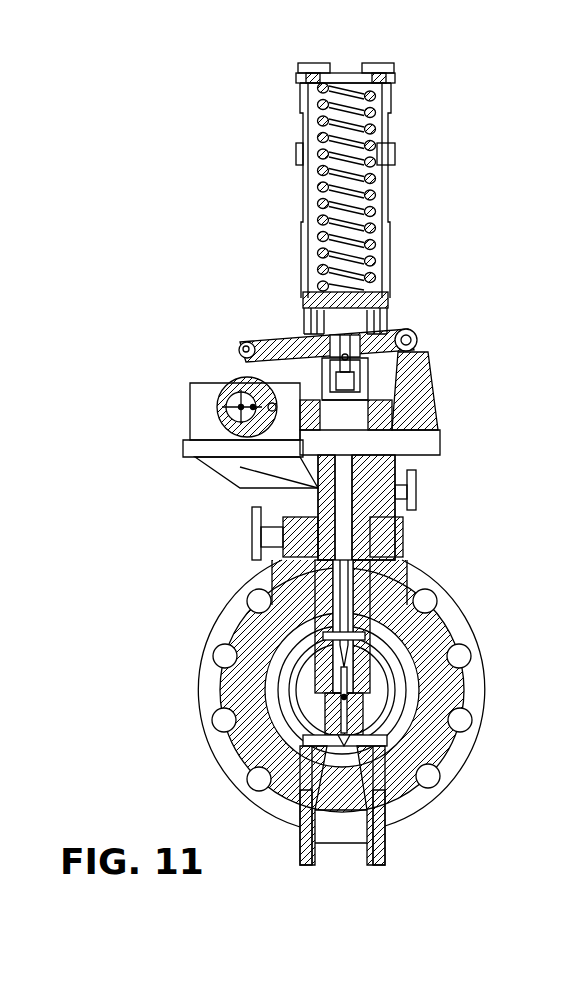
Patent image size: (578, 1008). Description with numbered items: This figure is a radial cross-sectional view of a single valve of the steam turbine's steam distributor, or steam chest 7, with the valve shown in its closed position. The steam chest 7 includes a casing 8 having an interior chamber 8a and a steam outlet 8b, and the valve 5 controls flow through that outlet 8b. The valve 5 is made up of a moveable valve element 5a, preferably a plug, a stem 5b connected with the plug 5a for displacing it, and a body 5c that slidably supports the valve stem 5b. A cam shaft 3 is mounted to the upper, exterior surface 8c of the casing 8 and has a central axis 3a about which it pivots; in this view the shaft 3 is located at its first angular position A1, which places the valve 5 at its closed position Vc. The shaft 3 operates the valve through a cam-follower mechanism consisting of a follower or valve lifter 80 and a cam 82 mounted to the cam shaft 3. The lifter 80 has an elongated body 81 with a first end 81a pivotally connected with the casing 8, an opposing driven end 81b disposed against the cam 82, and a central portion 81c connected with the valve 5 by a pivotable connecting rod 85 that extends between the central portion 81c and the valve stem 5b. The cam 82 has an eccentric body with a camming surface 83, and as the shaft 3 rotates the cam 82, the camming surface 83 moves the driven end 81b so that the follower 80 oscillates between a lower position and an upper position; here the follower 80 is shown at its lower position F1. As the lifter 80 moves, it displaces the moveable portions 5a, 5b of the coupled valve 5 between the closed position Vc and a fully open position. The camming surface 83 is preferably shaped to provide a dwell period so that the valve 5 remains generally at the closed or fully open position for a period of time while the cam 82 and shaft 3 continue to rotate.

The follower or valve lifter 80 is at (395, 307).
The elongated body 81 is at (293, 332).
The first end 81a is at (418, 334).
The driven end 81b is at (242, 346).
The central portion 81c is at (370, 372).
The cam 82 is at (256, 446).
The eccentric body / camming surface 83 is at (237, 386).
The pivotable connecting rod 85 is at (362, 390).
The upper exterior surface 8c is at (438, 414).
The cam shaft 3 is at (216, 407).
The central axis 3a is at (235, 397).
The first angular position A1 is at (250, 438).
The lower position F1 is at (287, 340).
The valve 5 is at (466, 490).
The moveable valve element 5a is at (347, 733).
The stem 5b is at (346, 620).
The body 5c is at (385, 573).
The closed position Vc is at (346, 695).
The steam distributor or steam chest 7 is at (188, 673).
The casing 8 is at (230, 722).
The interior chamber 8a is at (404, 685).
The steam outlet 8b is at (333, 784).